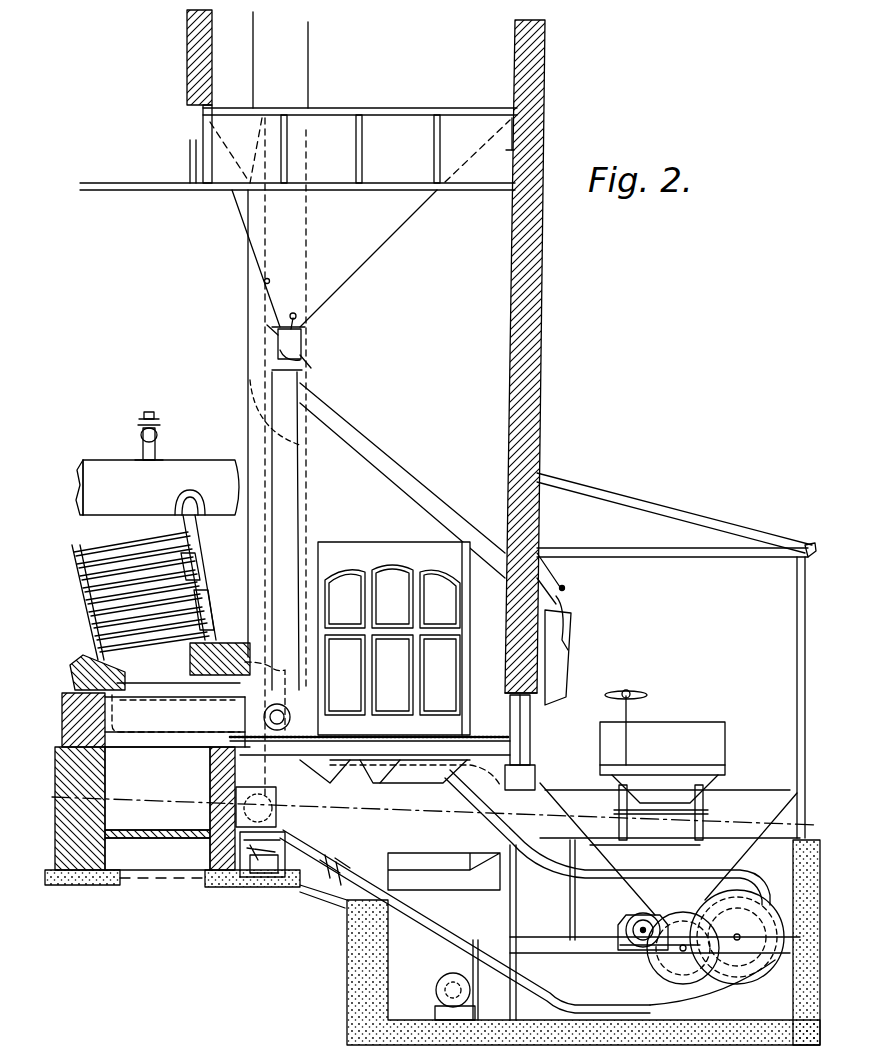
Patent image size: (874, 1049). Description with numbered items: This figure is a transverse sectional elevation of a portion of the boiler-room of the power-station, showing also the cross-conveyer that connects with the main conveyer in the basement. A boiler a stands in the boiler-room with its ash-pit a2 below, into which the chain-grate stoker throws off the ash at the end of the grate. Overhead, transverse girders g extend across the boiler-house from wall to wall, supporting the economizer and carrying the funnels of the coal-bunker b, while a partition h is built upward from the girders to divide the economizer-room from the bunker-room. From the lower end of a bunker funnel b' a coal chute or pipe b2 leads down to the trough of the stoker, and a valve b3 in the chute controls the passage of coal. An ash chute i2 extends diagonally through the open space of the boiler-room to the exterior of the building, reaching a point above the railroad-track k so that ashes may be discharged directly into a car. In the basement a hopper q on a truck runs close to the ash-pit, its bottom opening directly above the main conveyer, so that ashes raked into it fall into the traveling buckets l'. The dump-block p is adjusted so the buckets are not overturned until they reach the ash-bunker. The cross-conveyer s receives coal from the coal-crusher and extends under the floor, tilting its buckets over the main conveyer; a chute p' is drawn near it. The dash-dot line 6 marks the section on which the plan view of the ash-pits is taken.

The partition h is at (200, 42).
The coal-bunker b is at (334, 406).
The transverse girder g is at (260, 118).
The funnel of the coal-bunker b' is at (288, 327).
The valve b3 is at (277, 353).
The coal chute or pipe b2 is at (288, 507).
The ash chute or pipe i2 is at (358, 446).
The boiler a is at (160, 551).
The ash-pit a2 is at (172, 774).
The bucket l' is at (273, 836).
The hopper q is at (310, 832).
The cross-conveyer s is at (474, 800).
The dump-block p is at (701, 954).
The hopper p' is at (668, 849).
The railroad-track k is at (700, 836).
The section line 6 6 is at (434, 814).